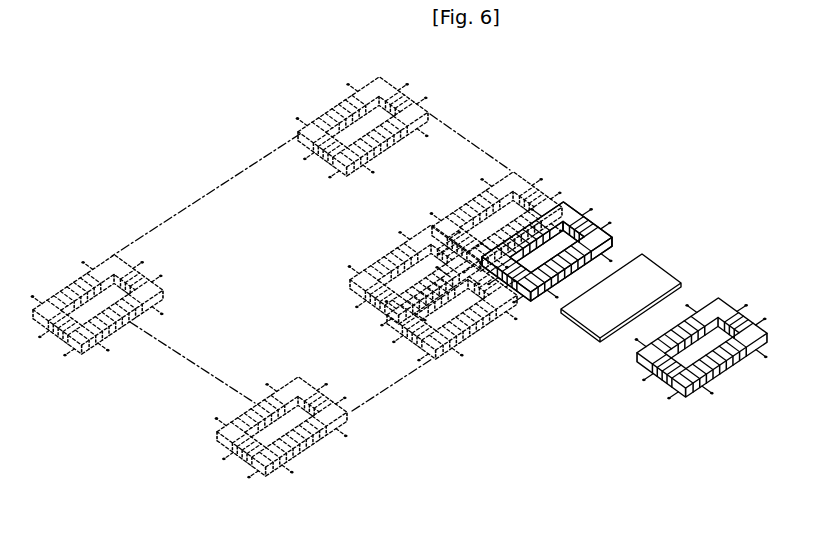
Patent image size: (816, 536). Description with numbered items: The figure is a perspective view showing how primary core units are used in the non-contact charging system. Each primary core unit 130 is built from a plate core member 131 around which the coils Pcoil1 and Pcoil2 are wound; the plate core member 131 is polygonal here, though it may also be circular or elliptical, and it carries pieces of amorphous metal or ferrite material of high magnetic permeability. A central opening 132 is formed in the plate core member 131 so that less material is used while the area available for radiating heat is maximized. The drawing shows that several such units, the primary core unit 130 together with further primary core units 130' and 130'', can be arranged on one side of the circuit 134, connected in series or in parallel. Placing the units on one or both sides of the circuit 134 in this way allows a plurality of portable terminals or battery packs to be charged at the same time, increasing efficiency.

The primary core unit 130 is at (509, 237).
The primary core unit 130' is at (391, 113).
The coil module 130'' is at (301, 446).
The plate core member 131 is at (600, 232).
The central opening 132 is at (578, 211).
The circuit 134 is at (598, 332).
The coil Pcoil1 is at (518, 300).
The coil Pcoil2 is at (610, 249).